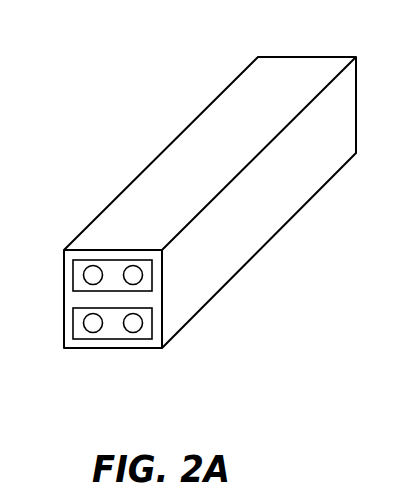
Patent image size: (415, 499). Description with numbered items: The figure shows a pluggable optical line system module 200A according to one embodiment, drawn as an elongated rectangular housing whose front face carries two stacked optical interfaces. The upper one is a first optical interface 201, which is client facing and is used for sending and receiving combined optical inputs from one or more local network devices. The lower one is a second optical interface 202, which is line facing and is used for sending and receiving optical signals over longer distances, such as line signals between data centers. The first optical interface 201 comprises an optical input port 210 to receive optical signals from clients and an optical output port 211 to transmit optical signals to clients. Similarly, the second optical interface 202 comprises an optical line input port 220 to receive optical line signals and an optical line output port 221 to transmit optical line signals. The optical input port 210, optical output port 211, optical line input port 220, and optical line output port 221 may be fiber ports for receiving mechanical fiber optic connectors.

The pluggable optical line system module 200A is at (345, 55).
The first optical interface 201 is at (73, 275).
The second optical interface 202 is at (73, 325).
The optical input port 210 is at (93, 265).
The optical output port 211 is at (137, 268).
The optical line input port 220 is at (91, 333).
The optical line output port 221 is at (135, 333).